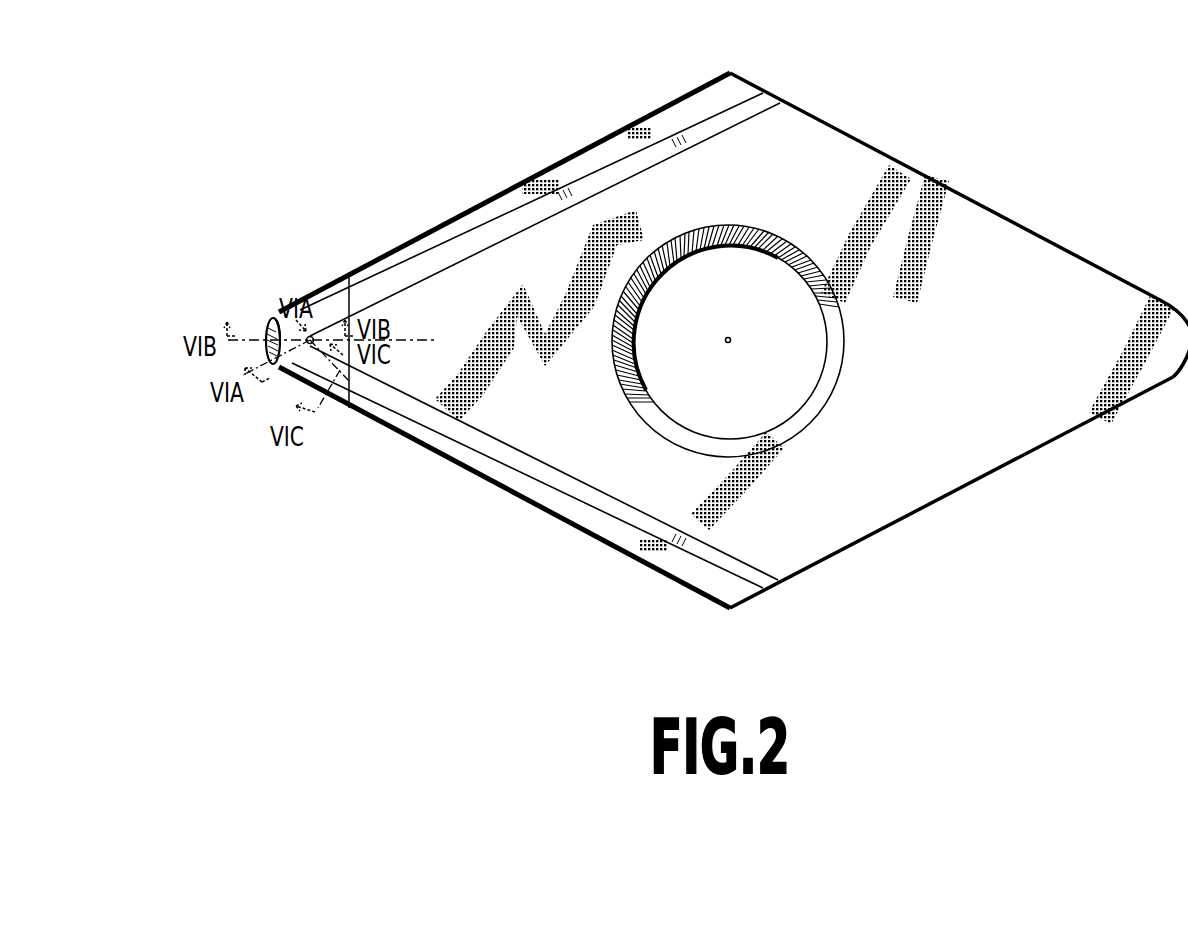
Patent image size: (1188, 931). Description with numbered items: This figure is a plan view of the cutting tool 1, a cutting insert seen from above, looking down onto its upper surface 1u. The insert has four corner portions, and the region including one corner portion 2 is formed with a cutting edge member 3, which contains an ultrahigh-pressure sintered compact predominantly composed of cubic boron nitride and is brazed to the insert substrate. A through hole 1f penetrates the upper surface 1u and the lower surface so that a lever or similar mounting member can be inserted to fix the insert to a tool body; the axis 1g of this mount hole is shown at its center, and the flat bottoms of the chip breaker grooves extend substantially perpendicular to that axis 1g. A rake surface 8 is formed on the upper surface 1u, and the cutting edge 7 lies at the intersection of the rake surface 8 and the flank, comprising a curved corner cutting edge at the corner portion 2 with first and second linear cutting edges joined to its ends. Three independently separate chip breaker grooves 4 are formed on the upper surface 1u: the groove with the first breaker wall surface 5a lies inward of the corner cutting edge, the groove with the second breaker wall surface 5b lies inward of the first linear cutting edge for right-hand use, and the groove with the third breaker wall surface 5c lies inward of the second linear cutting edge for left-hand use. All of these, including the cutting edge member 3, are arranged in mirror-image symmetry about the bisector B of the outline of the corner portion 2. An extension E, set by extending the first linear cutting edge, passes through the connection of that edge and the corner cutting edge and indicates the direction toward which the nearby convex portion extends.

The cutting tool 1 is at (993, 258).
The through hole 1f is at (823, 347).
The axis of the mount hole 1g is at (728, 343).
The upper surface 1u is at (408, 297).
The corner portion 2 is at (268, 322).
The cutting edge member 3 is at (328, 312).
The chip breaker groove 4 is at (328, 322).
The first breaker wall surface 5a is at (266, 352).
The second breaker wall surface 5b is at (421, 422).
The third breaker wall surface 5c is at (436, 246).
The cutting edge 7 is at (288, 375).
The rake surface 8 is at (342, 400).
The bisector B is at (407, 340).
The extension E is at (745, 618).